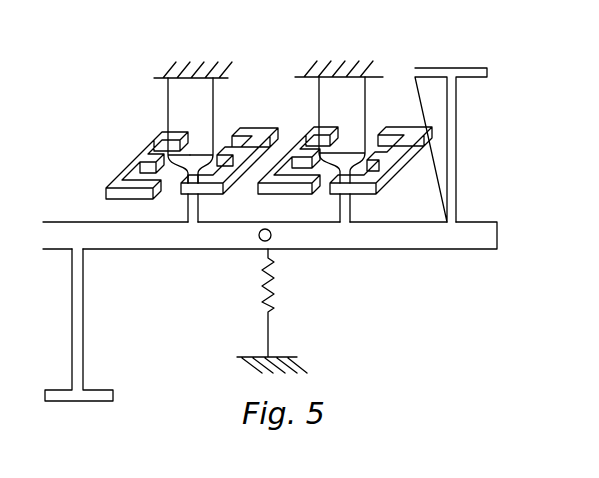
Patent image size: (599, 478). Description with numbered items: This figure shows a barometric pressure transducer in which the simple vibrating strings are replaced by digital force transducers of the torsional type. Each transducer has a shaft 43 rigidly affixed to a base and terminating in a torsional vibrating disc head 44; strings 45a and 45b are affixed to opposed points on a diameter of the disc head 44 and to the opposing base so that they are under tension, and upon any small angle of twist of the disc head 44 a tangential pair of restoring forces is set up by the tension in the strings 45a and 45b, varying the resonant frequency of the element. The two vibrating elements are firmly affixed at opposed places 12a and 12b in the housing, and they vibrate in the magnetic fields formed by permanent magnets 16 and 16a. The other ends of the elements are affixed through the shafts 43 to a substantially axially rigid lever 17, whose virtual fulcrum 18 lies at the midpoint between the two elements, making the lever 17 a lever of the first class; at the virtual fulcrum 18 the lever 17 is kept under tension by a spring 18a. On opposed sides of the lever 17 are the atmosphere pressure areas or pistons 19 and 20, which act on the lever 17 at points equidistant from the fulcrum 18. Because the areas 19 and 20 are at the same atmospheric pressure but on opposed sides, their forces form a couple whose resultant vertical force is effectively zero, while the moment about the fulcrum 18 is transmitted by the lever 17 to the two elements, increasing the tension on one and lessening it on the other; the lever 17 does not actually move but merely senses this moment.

The opposed place in housing 12a is at (194, 78).
The opposed place in housing 12b is at (338, 77).
The permanent magnet 16 is at (160, 132).
The permanent magnet 16a is at (311, 138).
The lever 17 is at (488, 232).
The virtual fulcrum 18 is at (272, 235).
The spring 18a is at (276, 301).
The atmosphere pressure area 19 is at (467, 68).
The atmosphere pressure area 20 is at (76, 392).
The shaft 43 is at (199, 210).
The torsional vibrating disc head 44 is at (186, 170).
The string 45a is at (168, 103).
The string 45b is at (215, 110).